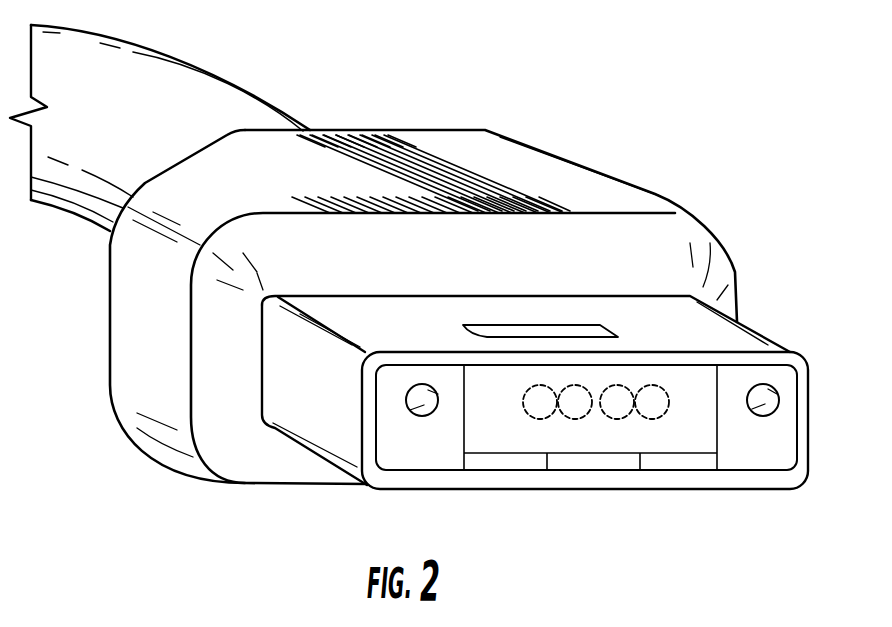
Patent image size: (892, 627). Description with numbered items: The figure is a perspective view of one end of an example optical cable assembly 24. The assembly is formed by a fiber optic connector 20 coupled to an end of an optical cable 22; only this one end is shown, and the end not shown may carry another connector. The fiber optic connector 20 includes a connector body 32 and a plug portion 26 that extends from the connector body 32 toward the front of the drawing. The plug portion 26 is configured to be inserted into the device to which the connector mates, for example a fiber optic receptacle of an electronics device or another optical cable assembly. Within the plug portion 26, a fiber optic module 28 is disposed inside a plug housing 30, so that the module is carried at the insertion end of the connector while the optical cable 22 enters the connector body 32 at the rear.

The fiber optic connector 20 is at (686, 185).
The optical cable 22 is at (242, 84).
The optical cable assembly 24 is at (556, 82).
The plug portion 26 is at (804, 345).
The fiber optic module 28 is at (738, 450).
The plug housing 30 is at (634, 490).
The connector body 32 is at (735, 268).